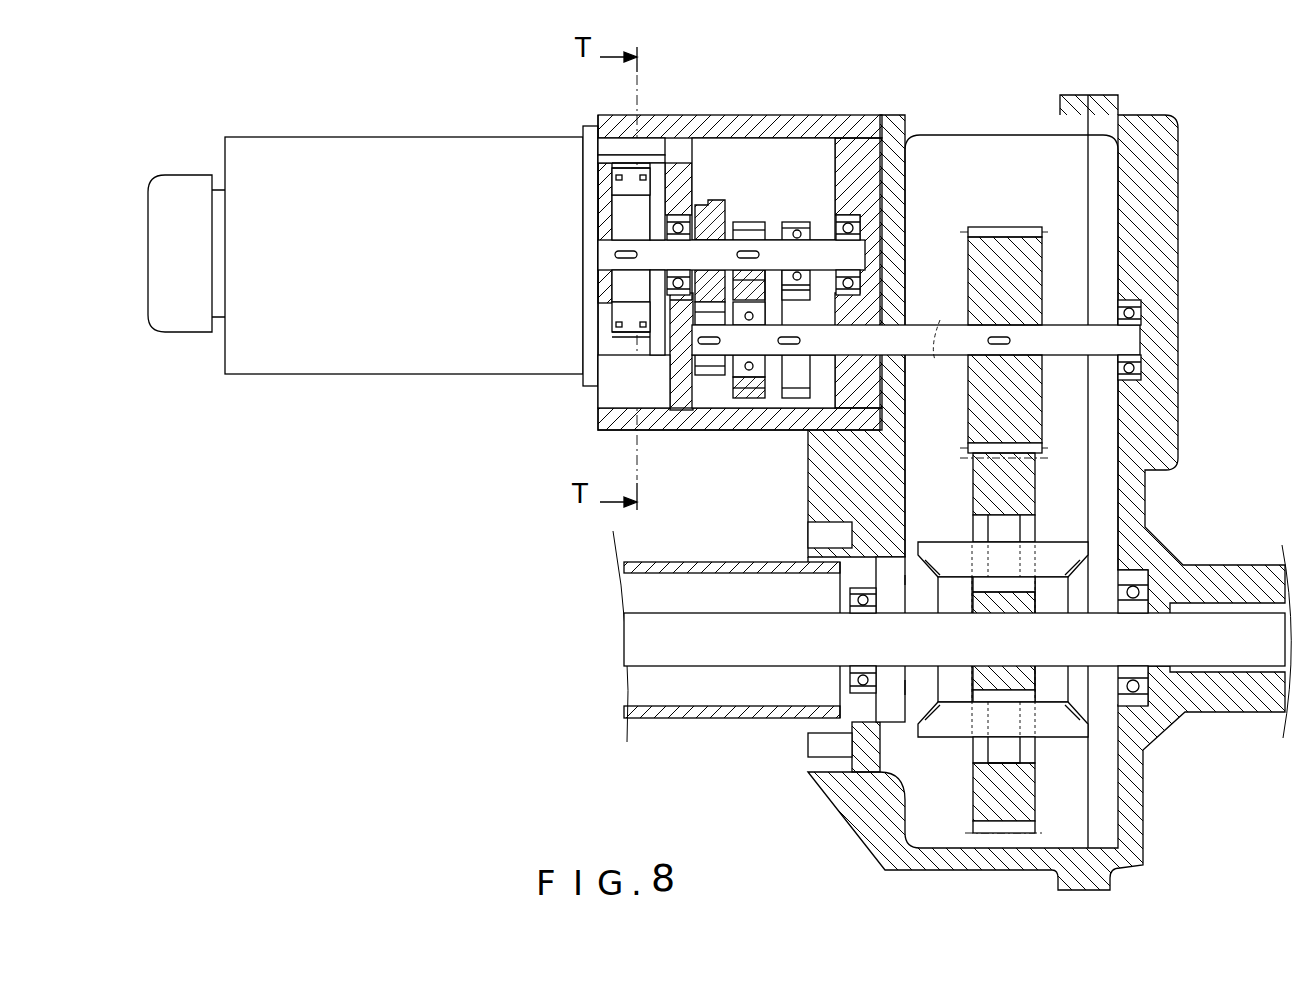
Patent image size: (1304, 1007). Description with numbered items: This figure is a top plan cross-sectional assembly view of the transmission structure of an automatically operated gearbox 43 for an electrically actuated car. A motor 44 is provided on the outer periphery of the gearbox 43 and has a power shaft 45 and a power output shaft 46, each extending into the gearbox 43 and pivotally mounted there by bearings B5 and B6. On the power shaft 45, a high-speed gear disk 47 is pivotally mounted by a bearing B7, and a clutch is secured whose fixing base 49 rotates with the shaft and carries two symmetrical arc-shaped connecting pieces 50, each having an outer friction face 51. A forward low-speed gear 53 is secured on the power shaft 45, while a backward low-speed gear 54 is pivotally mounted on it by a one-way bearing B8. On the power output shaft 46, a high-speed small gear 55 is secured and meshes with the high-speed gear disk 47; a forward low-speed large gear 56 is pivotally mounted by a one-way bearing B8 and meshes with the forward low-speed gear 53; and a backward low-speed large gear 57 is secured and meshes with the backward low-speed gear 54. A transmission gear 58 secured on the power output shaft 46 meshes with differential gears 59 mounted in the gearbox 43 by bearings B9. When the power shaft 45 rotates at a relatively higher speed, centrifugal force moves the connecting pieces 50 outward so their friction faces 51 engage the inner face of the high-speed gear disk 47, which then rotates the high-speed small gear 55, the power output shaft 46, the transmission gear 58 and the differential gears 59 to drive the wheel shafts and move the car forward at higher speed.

The gearbox 43 is at (930, 120).
The motor 44 is at (384, 150).
The power shaft 45 is at (865, 257).
The power output shaft 46 is at (1063, 330).
The high-speed gear disk 47 is at (708, 200).
The fixing base 49 is at (600, 215).
The connecting pieces 50 is at (622, 182).
The friction face 51 is at (628, 165).
The forward low-speed gear 53 is at (748, 222).
The backward low-speed gear 54 is at (792, 222).
The high-speed small gear 55 is at (712, 376).
The forward low-speed large gear 56 is at (748, 398).
The backward low-speed large gear 57 is at (795, 398).
The transmission gear 58 is at (1003, 235).
The differential gears 59 is at (963, 538).
The bearing B5 is at (862, 226).
The bearing B6 is at (1118, 367).
The bearing B7 is at (672, 228).
The one-way bearing B8 is at (803, 236).
The bearings B9 is at (851, 603).